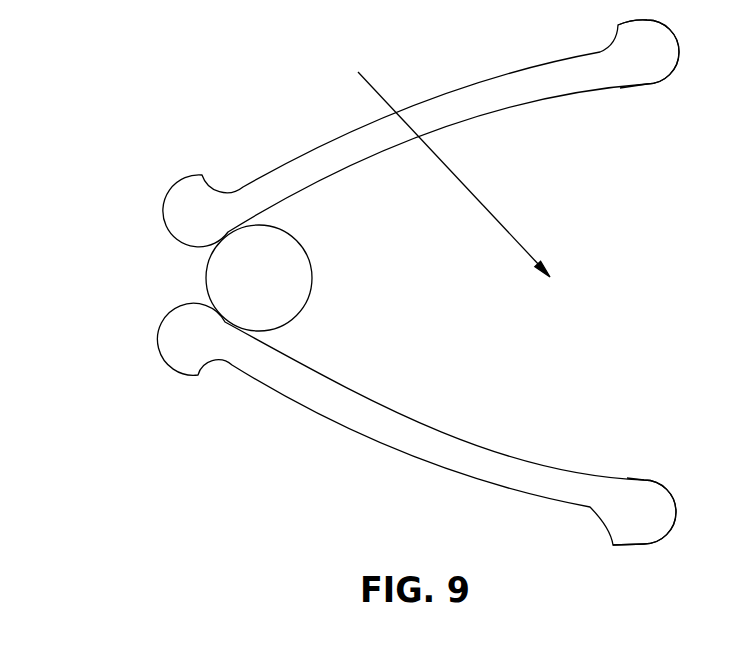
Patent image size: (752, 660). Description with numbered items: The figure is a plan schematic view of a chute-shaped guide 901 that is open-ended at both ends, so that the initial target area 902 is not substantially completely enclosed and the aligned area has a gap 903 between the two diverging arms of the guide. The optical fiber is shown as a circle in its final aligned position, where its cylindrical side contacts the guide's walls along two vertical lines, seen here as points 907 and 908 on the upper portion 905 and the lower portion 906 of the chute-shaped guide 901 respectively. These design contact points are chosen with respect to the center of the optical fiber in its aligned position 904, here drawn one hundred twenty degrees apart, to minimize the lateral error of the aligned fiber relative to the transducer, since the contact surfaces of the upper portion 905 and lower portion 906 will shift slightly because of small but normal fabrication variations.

The chute-shaped guide 901 is at (598, 80).
The initial target area 902 is at (440, 161).
The gap 903 is at (187, 278).
The center of the optical fiber in its aligned position 904 is at (267, 305).
The upper portion 905 is at (308, 170).
The lower portion 906 is at (347, 412).
The contact point 907 is at (230, 233).
The contact point 908 is at (230, 323).